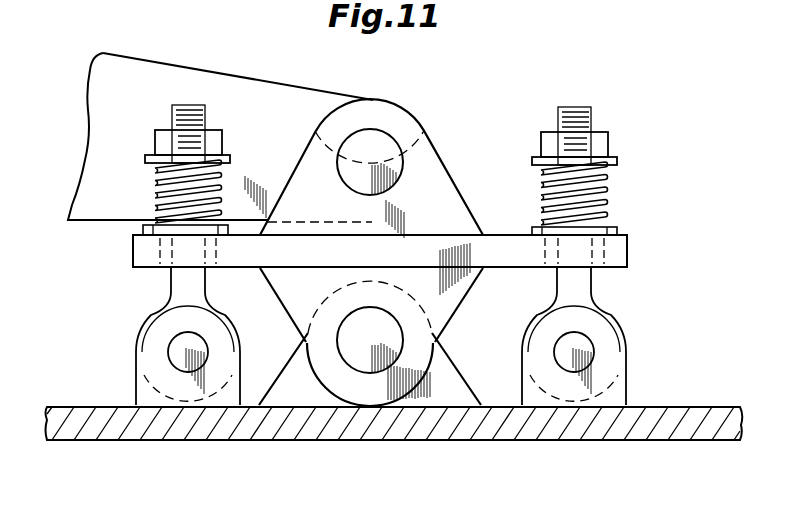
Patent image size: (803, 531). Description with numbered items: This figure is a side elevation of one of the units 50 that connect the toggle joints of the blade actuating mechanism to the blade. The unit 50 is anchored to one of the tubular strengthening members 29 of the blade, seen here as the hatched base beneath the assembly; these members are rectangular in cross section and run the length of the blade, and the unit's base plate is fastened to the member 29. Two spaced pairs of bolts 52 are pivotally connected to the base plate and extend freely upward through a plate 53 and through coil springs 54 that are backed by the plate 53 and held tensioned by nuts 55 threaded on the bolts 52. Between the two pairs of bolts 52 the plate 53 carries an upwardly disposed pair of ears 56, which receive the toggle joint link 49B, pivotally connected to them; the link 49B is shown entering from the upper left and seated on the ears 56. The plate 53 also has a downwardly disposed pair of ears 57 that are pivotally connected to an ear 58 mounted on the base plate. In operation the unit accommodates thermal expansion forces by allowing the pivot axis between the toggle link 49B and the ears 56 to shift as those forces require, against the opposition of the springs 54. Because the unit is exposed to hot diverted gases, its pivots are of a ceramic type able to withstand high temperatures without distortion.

The tubular strengthening member 29 is at (470, 442).
The toggle joint link 49B is at (253, 82).
The unit 50 is at (378, 267).
The bolts 52 is at (172, 280).
The plate 53 is at (628, 252).
The coil springs 54 is at (156, 198).
The nuts 55 is at (225, 132).
The upwardly disposed ears 56 is at (451, 176).
The downwardly disposed ears 57 is at (452, 322).
The ear 58 is at (297, 378).